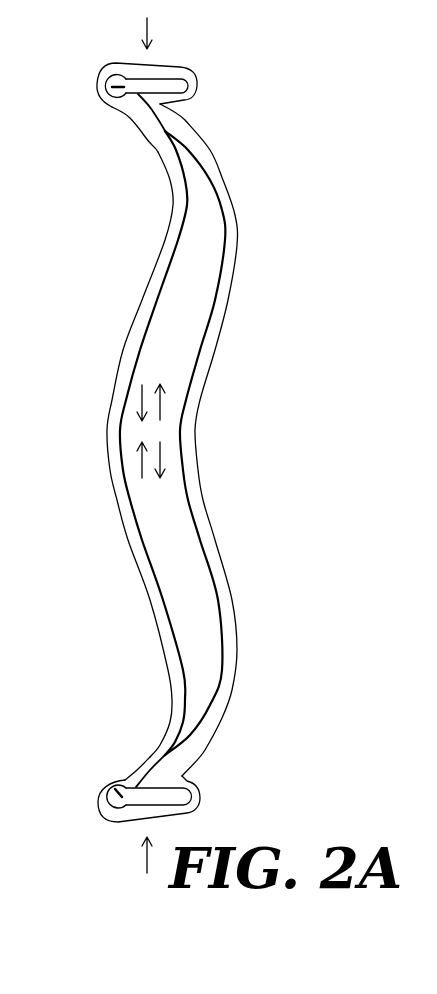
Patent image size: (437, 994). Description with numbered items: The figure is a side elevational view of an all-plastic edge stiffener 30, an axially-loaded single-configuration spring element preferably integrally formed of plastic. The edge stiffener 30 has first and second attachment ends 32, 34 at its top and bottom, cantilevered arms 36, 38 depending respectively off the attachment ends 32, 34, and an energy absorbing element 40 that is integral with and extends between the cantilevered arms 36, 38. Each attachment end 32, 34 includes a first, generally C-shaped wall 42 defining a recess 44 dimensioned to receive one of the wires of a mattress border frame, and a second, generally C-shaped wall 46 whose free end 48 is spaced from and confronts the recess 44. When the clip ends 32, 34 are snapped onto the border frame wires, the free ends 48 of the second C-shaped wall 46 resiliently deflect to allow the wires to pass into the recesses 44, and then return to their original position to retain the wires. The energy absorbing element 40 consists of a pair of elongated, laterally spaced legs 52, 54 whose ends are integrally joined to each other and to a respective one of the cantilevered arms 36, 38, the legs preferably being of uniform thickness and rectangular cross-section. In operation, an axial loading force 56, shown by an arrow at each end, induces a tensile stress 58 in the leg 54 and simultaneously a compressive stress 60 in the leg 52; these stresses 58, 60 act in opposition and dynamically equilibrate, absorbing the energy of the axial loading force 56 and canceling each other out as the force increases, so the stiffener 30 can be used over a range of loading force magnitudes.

The all-plastic edge stiffener 30 is at (145, 447).
The first attachment end 32 is at (166, 68).
The second attachment end 34 is at (106, 823).
The cantilevered arm 36 is at (127, 122).
The cantilevered arm 38 is at (150, 756).
The energy absorbing element 40 is at (145, 440).
The first C-shaped wall 42 is at (109, 64).
The recess 44 is at (106, 86).
The second C-shaped wall 46 is at (195, 88).
The free end 48 is at (150, 100).
The leg 52 is at (122, 348).
The leg 54 is at (216, 350).
The axial loading force 56 is at (150, 34).
The tensile stress 58 is at (162, 458).
The compressive stress 60 is at (138, 398).